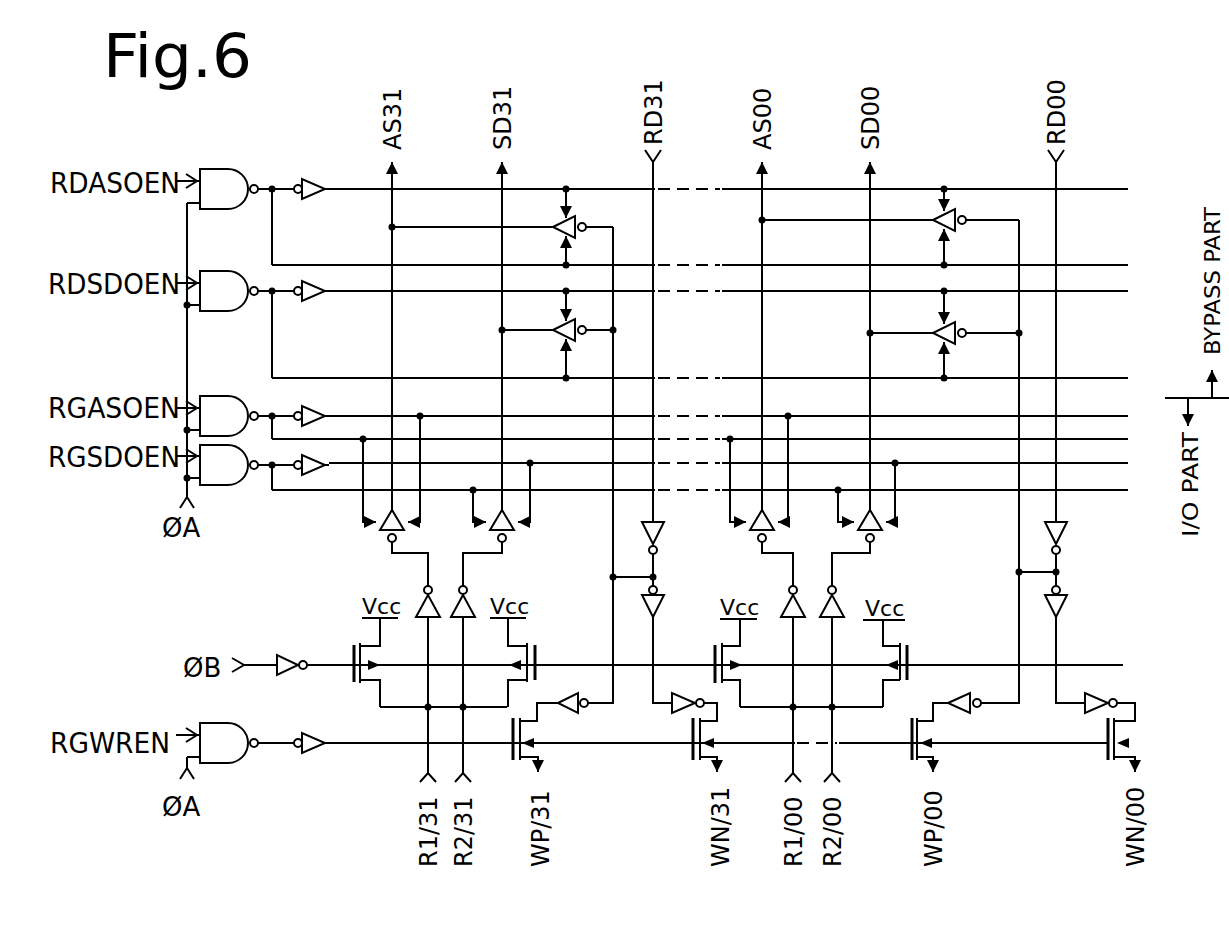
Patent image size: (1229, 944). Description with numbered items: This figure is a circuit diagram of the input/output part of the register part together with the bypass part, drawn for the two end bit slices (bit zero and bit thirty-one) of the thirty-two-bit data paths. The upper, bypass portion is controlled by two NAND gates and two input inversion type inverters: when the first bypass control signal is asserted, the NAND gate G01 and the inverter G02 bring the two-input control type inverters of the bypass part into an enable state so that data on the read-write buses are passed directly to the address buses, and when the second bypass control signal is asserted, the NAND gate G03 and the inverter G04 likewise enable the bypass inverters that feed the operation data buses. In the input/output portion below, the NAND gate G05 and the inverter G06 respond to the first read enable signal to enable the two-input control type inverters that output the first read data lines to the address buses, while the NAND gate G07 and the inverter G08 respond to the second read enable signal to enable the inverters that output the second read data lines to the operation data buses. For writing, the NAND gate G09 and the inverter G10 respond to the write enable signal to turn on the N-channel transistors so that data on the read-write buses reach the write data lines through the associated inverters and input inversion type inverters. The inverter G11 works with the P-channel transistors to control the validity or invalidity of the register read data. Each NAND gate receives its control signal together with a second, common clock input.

The NAND gate G01 is at (219, 177).
The input inversion type inverter G02 is at (314, 177).
The NAND gate G03 is at (219, 280).
The input inversion type inverter G04 is at (315, 300).
The NAND gate G05 is at (229, 410).
The input inversion type inverter G06 is at (314, 410).
The NAND gate G07 is at (226, 475).
The input inversion type inverter G08 is at (312, 475).
The NAND gate G09 is at (220, 763).
The input inversion type inverter G10 is at (312, 753).
The inverter G11 is at (286, 656).